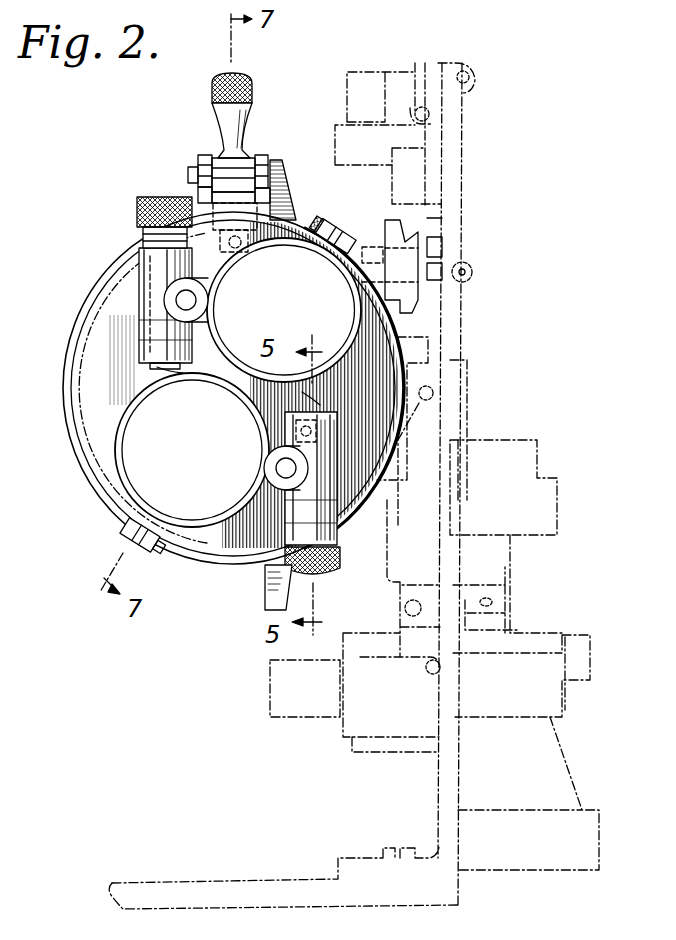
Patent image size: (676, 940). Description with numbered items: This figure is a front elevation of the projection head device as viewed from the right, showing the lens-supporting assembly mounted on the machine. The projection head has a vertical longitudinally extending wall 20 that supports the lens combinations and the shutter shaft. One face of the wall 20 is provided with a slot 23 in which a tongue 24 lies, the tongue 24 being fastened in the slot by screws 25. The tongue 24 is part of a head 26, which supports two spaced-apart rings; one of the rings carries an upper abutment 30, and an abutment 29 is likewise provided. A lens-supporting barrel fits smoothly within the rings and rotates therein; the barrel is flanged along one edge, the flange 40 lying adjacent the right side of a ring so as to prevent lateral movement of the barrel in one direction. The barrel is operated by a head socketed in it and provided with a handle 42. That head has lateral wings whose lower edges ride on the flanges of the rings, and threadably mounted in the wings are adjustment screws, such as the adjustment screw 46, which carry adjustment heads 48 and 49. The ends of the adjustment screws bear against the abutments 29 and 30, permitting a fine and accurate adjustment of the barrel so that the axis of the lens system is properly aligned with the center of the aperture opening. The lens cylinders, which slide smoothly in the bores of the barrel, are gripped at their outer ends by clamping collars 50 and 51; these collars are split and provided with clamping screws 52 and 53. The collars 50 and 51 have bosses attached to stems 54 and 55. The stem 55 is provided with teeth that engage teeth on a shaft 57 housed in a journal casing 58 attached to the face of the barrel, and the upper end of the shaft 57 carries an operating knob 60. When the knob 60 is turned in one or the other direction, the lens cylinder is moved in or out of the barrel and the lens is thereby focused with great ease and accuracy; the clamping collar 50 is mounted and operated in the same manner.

The vertical longitudinally extending wall 20 is at (435, 414).
The slot 23 is at (437, 218).
The tongue 24 is at (476, 268).
The screws 25 is at (443, 248).
The head 26 is at (394, 234).
The abutment 29 is at (287, 192).
The upper abutment 30 is at (277, 587).
The flange 40 is at (97, 335).
The handle 42 is at (236, 120).
The adjustment screw 46 is at (189, 172).
The adjustment head 48 is at (262, 156).
The adjustment head 49 is at (204, 156).
The clamping collar 50 is at (355, 342).
The clamping collar 51 is at (128, 422).
The clamping screw 52 is at (322, 222).
The clamping screw 53 is at (150, 548).
The stem 54 is at (192, 303).
The stem 55 is at (277, 470).
The shaft 57 is at (157, 367).
The journal casing 58 is at (150, 280).
The operating knob 60 is at (137, 212).